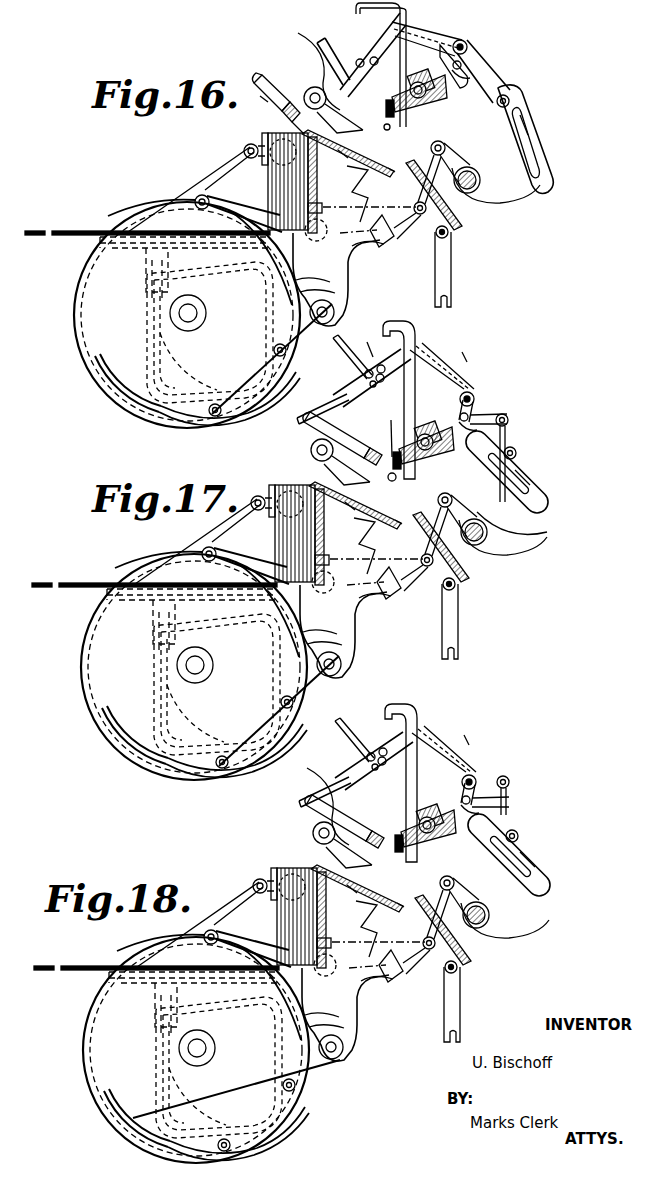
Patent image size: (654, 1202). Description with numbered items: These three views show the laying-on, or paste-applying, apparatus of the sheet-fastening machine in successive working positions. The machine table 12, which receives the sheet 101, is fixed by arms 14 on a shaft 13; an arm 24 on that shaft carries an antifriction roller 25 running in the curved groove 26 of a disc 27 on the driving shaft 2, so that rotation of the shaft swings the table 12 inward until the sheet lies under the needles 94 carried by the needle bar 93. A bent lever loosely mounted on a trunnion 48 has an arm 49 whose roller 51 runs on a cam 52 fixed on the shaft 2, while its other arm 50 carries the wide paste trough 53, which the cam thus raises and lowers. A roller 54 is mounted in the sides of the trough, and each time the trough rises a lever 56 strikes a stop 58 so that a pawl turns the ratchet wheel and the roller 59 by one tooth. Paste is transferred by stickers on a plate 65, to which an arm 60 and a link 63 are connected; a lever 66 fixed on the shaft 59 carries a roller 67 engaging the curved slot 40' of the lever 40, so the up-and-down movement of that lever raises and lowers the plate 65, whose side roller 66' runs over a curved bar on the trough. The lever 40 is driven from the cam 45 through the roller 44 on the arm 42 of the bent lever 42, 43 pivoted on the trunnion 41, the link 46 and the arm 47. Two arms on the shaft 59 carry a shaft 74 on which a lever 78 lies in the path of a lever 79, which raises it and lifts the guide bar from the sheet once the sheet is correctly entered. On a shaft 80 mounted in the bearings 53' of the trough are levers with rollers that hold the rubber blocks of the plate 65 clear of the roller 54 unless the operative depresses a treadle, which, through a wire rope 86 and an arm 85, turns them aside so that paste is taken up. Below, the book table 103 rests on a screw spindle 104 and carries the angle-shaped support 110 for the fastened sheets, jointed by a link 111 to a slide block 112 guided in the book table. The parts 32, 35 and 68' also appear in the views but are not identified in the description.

In FIG. 16, the driving shaft 2 is at (194, 312).
In FIG. 17, the driving shaft 2 is at (196, 665).
In FIG. 18, the driving shaft 2 is at (202, 1052).
In FIG. 16, the machine table 12 is at (345, 197).
In FIG. 17, the machine table 12 is at (360, 501).
In FIG. 18, the machine table 12 is at (362, 882).
In FIG. 16, the shaft 13 is at (322, 303).
In FIG. 17, the shaft 13 is at (328, 656).
In FIG. 18, the shaft 13 is at (345, 1048).
In FIG. 16, the arms 14 is at (333, 288).
In FIG. 17, the arms 14 is at (345, 642).
In FIG. 18, the arms 14 is at (350, 1021).
In FIG. 16, the arm 24 is at (285, 375).
In FIG. 17, the arm 24 is at (333, 689).
In FIG. 18, the arm 24 is at (337, 1081).
In FIG. 16, the antifriction roller 25 is at (222, 416).
In FIG. 17, the antifriction roller 25 is at (222, 771).
In FIG. 18, the antifriction roller 25 is at (238, 1147).
In FIG. 16, the curved groove 26 is at (156, 346).
In FIG. 17, the curved groove 26 is at (150, 686).
In FIG. 18, the curved groove 26 is at (153, 1070).
In FIG. 16, the disc 27 is at (110, 398).
In FIG. 17, the disc 27 is at (100, 740).
In FIG. 18, the disc 27 is at (93, 1004).
In FIG. 16, the pivot 32 is at (450, 234).
In FIG. 17, the pivot 32 is at (455, 585).
In FIG. 18, the pivot 32 is at (462, 967).
In FIG. 16, the bracket 35 is at (452, 262).
In FIG. 17, the bracket 35 is at (455, 608).
In FIG. 18, the bracket 35 is at (458, 996).
In FIG. 16, the lever 40 is at (530, 139).
In FIG. 17, the lever 40 is at (520, 472).
In FIG. 18, the lever 40 is at (527, 855).
In FIG. 16, the curved slot 40' is at (536, 107).
In FIG. 17, the curved slot 40' is at (541, 468).
In FIG. 18, the curved slot 40' is at (548, 854).
In FIG. 16, the trunnion 41 is at (312, 215).
In FIG. 17, the trunnion 41 is at (320, 560).
In FIG. 18, the trunnion 41 is at (321, 943).
In FIG. 16, the arm of bent lever 42 is at (243, 200).
In FIG. 17, the arm of bent lever 42 is at (250, 553).
In FIG. 18, the arm of bent lever 42 is at (258, 930).
In FIG. 16, the arm of bent lever 43 is at (404, 222).
In FIG. 17, the arm of bent lever 43 is at (408, 564).
In FIG. 18, the arm of bent lever 43 is at (410, 943).
In FIG. 16, the antifriction roller 44 is at (200, 196).
In FIG. 17, the antifriction roller 44 is at (205, 553).
In FIG. 18, the antifriction roller 44 is at (215, 912).
In FIG. 16, the cam 45 is at (118, 226).
In FIG. 17, the cam 45 is at (122, 580).
In FIG. 18, the cam 45 is at (133, 942).
In FIG. 16, the link 46 is at (432, 162).
In FIG. 17, the link 46 is at (460, 559).
In FIG. 18, the link 46 is at (462, 943).
In FIG. 16, the arm 47 is at (462, 160).
In FIG. 17, the arm 47 is at (470, 510).
In FIG. 18, the arm 47 is at (460, 890).
In FIG. 16, the trunnion 48 is at (275, 133).
In FIG. 17, the trunnion 48 is at (283, 486).
In FIG. 18, the trunnion 48 is at (285, 868).
In FIG. 16, the arm of bent lever 49 is at (338, 292).
In FIG. 17, the arm of bent lever 49 is at (363, 609).
In FIG. 18, the arm of bent lever 49 is at (367, 991).
In FIG. 16, the arm of bent lever 50 is at (314, 86).
In FIG. 17, the arm of bent lever 50 is at (312, 449).
In FIG. 18, the arm of bent lever 50 is at (378, 835).
In FIG. 16, the antifriction roller 51 is at (281, 357).
In FIG. 17, the antifriction roller 51 is at (290, 707).
In FIG. 18, the antifriction roller 51 is at (300, 1100).
In FIG. 16, the cam 52 is at (206, 382).
In FIG. 17, the cam 52 is at (200, 737).
In FIG. 18, the cam 52 is at (190, 1122).
In FIG. 16, the trough 53 is at (432, 97).
In FIG. 17, the trough 53 is at (429, 454).
In FIG. 18, the trough 53 is at (436, 834).
In FIG. 16, the bearings 53' is at (480, 50).
In FIG. 17, the bearings 53' is at (493, 409).
In FIG. 18, the bearings 53' is at (505, 817).
In FIG. 16, the roller 54 is at (470, 82).
In FIG. 17, the roller 54 is at (473, 415).
In FIG. 18, the roller 54 is at (481, 790).
In FIG. 17, the lever 56 is at (397, 480).
In FIG. 17, the stop 58 is at (388, 432).
In FIG. 16, the shaft 59 is at (460, 40).
In FIG. 17, the shaft 59 is at (469, 391).
In FIG. 18, the shaft 59 is at (470, 775).
In FIG. 16, the arm 60 is at (408, 30).
In FIG. 17, the arm 60 is at (434, 356).
In FIG. 18, the arm 60 is at (440, 730).
In FIG. 16, the link 63 is at (374, 22).
In FIG. 17, the link 63 is at (410, 333).
In FIG. 18, the link 63 is at (420, 703).
In FIG. 16, the plate 65 is at (418, 78).
In FIG. 17, the plate 65 is at (412, 421).
In FIG. 18, the plate 65 is at (395, 800).
In FIG. 16, the lever 66 is at (493, 71).
In FIG. 17, the lever 66 is at (502, 424).
In FIG. 18, the lever 66 is at (512, 791).
In FIG. 16, the roller 66' is at (305, 65).
In FIG. 18, the roller 66' is at (307, 806).
In FIG. 16, the antifriction roller 67 is at (500, 104).
In FIG. 17, the antifriction roller 67 is at (508, 461).
In FIG. 18, the antifriction roller 67 is at (505, 846).
In FIG. 17, the stop 68' is at (373, 332).
In FIG. 17, the shaft 74 is at (343, 392).
In FIG. 18, the shaft 74 is at (342, 756).
In FIG. 16, the lever 78 is at (330, 45).
In FIG. 17, the lever 78 is at (360, 360).
In FIG. 18, the lever 78 is at (353, 740).
In FIG. 16, the lever 79 is at (348, 156).
In FIG. 17, the lever 79 is at (352, 489).
In FIG. 18, the lever 79 is at (380, 866).
In FIG. 16, the shaft 80 is at (458, 60).
In FIG. 17, the shaft 80 is at (464, 412).
In FIG. 18, the shaft 80 is at (460, 798).
In FIG. 17, the arm 85 is at (508, 418).
In FIG. 18, the arm 85 is at (508, 782).
In FIG. 17, the wire rope 86 is at (513, 530).
In FIG. 16, the needle bar 93 is at (262, 98).
In FIG. 16, the needles 94 is at (308, 136).
In FIG. 17, the needles 94 is at (355, 505).
In FIG. 18, the needles 94 is at (357, 888).
In FIG. 16, the sheet 101 is at (392, 168).
In FIG. 17, the sheet 101 is at (396, 529).
In FIG. 18, the sheet 101 is at (405, 898).
In FIG. 16, the book table 103 is at (62, 229).
In FIG. 17, the book table 103 is at (62, 581).
In FIG. 18, the book table 103 is at (70, 964).
In FIG. 16, the screw spindle 104 is at (148, 268).
In FIG. 17, the screw spindle 104 is at (155, 620).
In FIG. 18, the screw spindle 104 is at (177, 998).
In FIG. 16, the angle-shaped member 110 is at (246, 148).
In FIG. 17, the angle-shaped member 110 is at (258, 498).
In FIG. 18, the angle-shaped member 110 is at (259, 875).
In FIG. 16, the link 111 is at (225, 168).
In FIG. 17, the link 111 is at (245, 505).
In FIG. 18, the link 111 is at (222, 908).
In FIG. 16, the slide block 112 is at (180, 210).
In FIG. 17, the slide block 112 is at (208, 592).
In FIG. 18, the slide block 112 is at (264, 976).